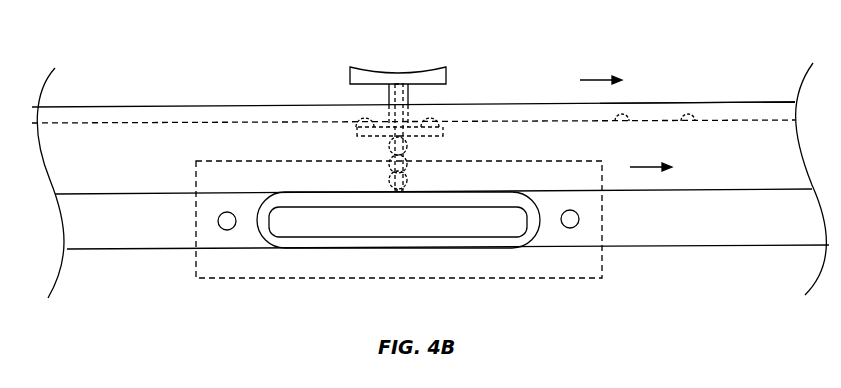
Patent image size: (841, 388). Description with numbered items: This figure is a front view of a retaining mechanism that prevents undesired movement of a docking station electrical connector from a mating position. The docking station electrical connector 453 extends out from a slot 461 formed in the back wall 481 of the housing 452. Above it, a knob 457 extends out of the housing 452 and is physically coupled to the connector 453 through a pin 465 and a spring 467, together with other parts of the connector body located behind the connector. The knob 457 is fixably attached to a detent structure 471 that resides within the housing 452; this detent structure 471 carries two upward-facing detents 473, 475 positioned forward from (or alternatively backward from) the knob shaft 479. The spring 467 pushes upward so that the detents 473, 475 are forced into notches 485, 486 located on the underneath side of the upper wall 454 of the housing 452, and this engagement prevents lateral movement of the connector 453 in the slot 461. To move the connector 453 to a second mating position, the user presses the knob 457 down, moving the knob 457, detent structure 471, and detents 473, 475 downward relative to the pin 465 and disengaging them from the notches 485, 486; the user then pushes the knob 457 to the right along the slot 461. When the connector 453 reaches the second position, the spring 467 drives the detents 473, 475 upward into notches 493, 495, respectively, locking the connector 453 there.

The back wall 481 is at (135, 169).
The housing 452 is at (413, 115).
The upper wall 454 is at (713, 179).
The notch 495 is at (636, 136).
The notch 493 is at (701, 136).
The slot 461 is at (442, 231).
The docking station electrical connector 453 is at (399, 219).
The knob 457 is at (388, 58).
The knob shaft 479 is at (435, 79).
The pin 465 is at (431, 157).
The spring 467 is at (363, 163).
The notch 486 is at (332, 98).
The notch 485 is at (463, 98).
The detent structure 471 is at (422, 156).
The detent 475 is at (350, 142).
The detent 473 is at (453, 141).